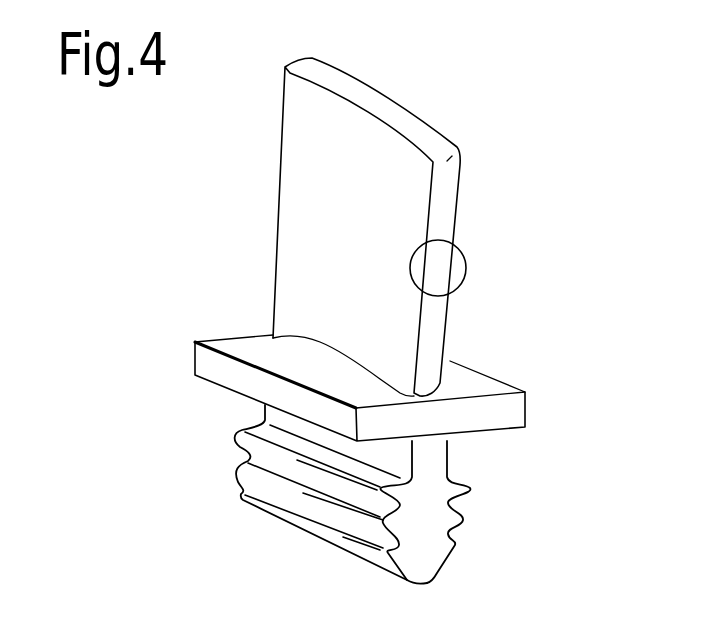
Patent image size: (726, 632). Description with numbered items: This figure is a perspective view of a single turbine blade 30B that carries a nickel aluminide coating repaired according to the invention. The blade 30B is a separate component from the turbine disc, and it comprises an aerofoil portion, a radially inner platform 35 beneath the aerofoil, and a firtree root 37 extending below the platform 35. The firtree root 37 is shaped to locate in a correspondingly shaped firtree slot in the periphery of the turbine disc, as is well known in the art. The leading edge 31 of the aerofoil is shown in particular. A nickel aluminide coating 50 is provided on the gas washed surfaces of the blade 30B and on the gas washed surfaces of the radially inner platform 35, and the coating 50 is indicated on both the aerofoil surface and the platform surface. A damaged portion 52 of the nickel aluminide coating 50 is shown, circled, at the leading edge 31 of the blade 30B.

The turbine blade 30B is at (493, 375).
The leading edge 31 is at (437, 315).
The radially inner platform 35 is at (500, 418).
The firtree root 37 is at (427, 537).
The nickel aluminide coating 50 is at (313, 212).
The damaged portion 52 is at (467, 252).